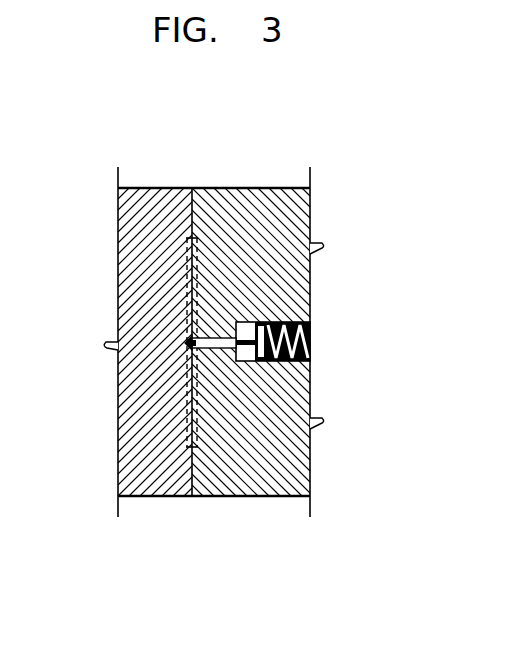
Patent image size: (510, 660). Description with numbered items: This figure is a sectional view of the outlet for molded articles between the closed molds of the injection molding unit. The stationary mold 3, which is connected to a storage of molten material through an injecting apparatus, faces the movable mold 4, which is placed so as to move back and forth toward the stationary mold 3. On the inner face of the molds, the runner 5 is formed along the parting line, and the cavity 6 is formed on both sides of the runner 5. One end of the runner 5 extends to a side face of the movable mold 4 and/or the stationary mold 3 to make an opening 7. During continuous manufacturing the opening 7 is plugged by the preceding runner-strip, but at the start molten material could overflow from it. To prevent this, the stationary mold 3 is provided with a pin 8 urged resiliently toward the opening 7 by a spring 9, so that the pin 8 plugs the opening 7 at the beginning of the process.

The stationary mold 3 is at (247, 210).
The movable mold 4 is at (153, 210).
The runner 5 is at (186, 340).
The cavity 6 is at (188, 278).
The opening 7 is at (186, 347).
The pin 8 is at (226, 336).
The spring 9 is at (311, 339).